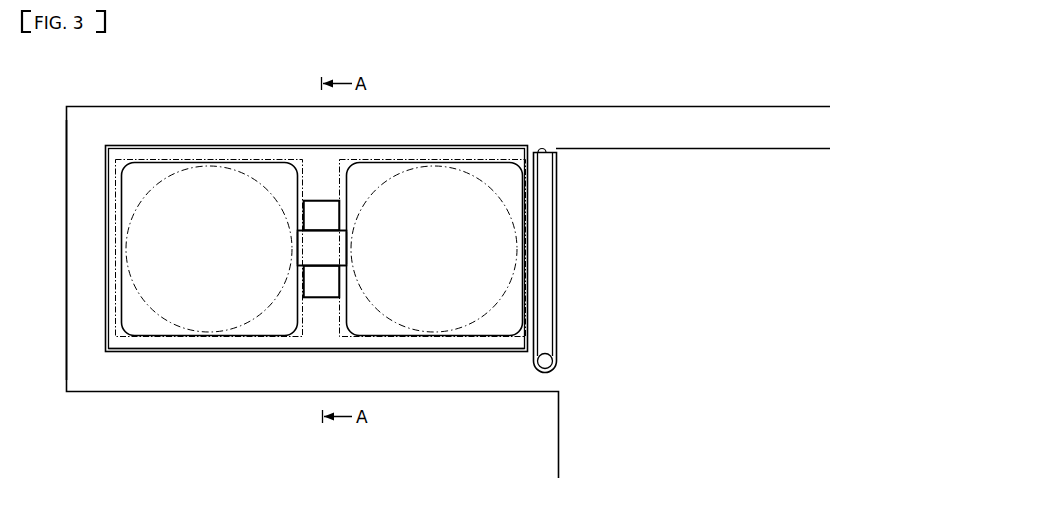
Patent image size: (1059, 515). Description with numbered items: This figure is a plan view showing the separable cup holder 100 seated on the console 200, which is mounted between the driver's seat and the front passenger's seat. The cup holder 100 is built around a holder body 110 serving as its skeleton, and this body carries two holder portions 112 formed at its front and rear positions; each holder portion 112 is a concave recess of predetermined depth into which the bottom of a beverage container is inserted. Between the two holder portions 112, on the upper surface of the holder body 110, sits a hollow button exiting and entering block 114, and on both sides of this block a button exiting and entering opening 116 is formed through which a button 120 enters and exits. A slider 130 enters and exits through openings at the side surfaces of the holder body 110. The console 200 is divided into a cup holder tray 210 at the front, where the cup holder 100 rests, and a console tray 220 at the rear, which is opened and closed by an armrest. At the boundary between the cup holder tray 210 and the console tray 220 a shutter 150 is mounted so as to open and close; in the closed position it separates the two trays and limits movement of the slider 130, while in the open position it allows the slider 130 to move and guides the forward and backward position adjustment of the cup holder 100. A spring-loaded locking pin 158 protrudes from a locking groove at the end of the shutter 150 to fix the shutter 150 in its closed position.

The separable cup holder 100 is at (350, 148).
The holder body 110 is at (325, 160).
The holder portion 112 is at (130, 193).
The button exiting and entering block 114 is at (307, 247).
The button exiting and entering opening 116 is at (318, 273).
The button 120 is at (315, 208).
The slider 130 is at (457, 352).
The shutter 150 is at (557, 173).
The locking pin 158 is at (541, 150).
The console 200 is at (188, 392).
The cup holder tray 210 is at (105, 297).
The console tray 220 is at (677, 190).